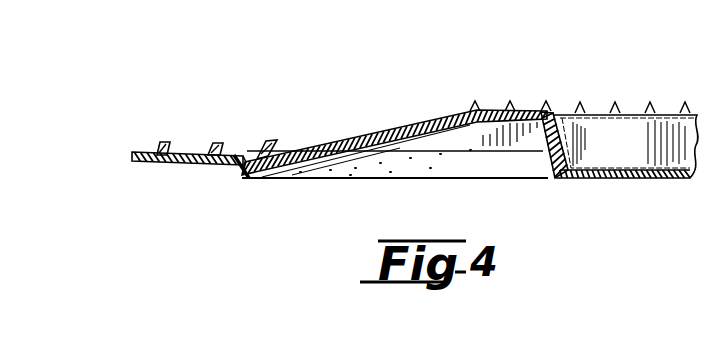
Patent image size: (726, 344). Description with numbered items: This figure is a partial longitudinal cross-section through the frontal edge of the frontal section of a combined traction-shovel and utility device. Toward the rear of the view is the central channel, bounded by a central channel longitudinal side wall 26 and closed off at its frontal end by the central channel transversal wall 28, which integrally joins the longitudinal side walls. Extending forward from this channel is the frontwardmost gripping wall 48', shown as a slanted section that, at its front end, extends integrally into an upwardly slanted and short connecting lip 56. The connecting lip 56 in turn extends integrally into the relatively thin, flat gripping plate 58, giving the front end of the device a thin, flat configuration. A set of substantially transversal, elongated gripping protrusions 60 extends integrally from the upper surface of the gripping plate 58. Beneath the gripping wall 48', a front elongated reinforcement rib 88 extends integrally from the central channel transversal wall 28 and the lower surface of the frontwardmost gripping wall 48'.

The central channel longitudinal side wall 26 is at (622, 137).
The central channel transversal wall 28 is at (549, 157).
The frontwardmost gripping wall 48' is at (466, 119).
The connecting lip 56 is at (242, 164).
The gripping plate 58 is at (153, 164).
The gripping protrusion 60 is at (324, 142).
The front elongated reinforcement rib 88 is at (338, 169).